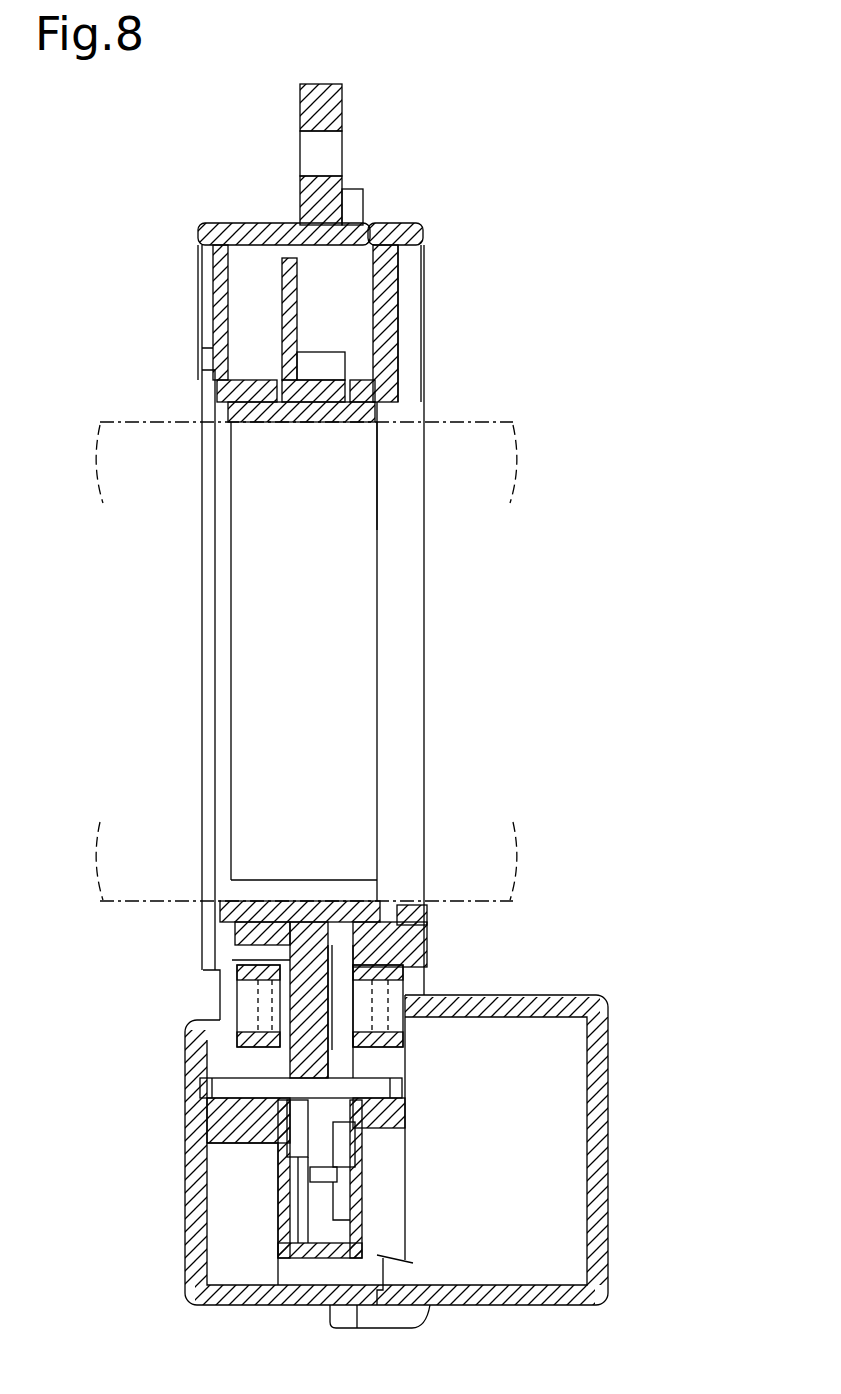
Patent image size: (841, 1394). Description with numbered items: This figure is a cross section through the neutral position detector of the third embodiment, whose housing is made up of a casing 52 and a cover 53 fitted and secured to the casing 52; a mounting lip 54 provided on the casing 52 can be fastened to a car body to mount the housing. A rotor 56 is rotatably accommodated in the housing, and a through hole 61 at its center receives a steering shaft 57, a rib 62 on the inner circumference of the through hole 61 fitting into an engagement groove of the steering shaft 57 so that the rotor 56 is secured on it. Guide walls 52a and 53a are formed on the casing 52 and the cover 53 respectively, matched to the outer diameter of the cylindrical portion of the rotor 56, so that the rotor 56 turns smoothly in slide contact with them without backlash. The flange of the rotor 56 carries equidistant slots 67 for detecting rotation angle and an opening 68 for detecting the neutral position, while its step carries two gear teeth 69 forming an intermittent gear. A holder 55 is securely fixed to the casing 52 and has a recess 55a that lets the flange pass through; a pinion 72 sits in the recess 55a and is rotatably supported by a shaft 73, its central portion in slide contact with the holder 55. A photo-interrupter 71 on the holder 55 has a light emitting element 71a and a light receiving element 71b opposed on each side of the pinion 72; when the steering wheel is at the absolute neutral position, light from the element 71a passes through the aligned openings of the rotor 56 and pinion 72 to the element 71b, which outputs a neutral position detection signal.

The casing 52 is at (230, 227).
The guide wall 52a is at (270, 405).
The cover 53 is at (402, 227).
The guide wall 53a is at (330, 425).
The mounting lip 54 is at (337, 98).
The holder 55 is at (240, 1143).
The recess 55a is at (330, 920).
The rotor 56 is at (297, 262).
The steering shaft 57 is at (115, 405).
The through hole 61 is at (347, 423).
The rib 62 is at (360, 880).
The slots 67 is at (230, 1030).
The opening (first opening) 68 is at (270, 985).
The gear teeth 69 is at (326, 355).
The photo-interrupter 71 is at (320, 986).
The light emitting element 71a is at (262, 1010).
The light receiving element 71b is at (385, 990).
The pinion 72 is at (340, 1180).
The shaft 73 is at (370, 1080).